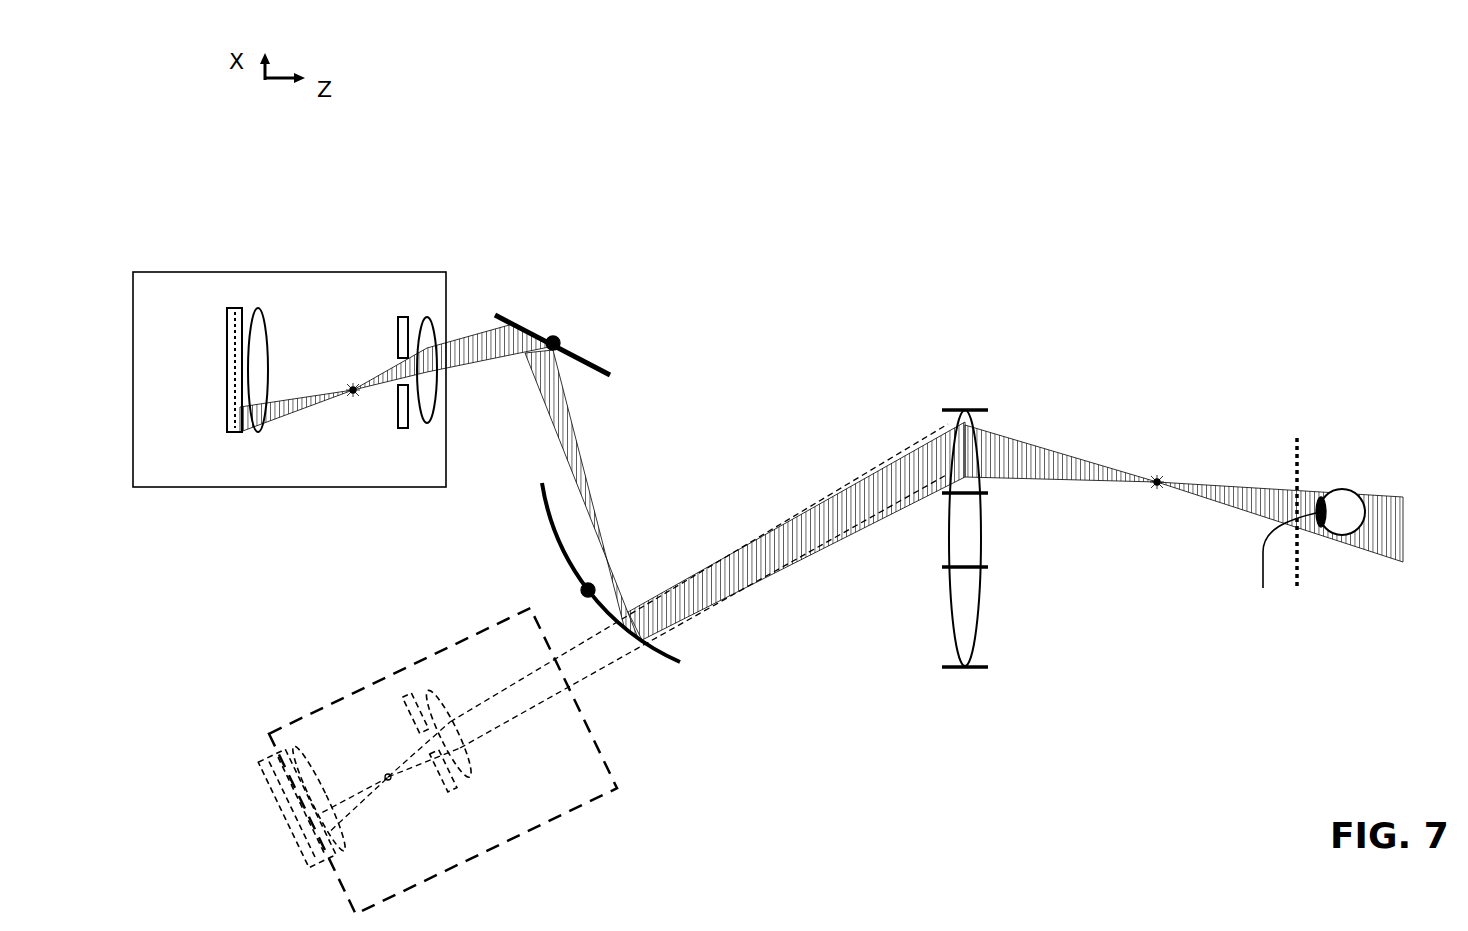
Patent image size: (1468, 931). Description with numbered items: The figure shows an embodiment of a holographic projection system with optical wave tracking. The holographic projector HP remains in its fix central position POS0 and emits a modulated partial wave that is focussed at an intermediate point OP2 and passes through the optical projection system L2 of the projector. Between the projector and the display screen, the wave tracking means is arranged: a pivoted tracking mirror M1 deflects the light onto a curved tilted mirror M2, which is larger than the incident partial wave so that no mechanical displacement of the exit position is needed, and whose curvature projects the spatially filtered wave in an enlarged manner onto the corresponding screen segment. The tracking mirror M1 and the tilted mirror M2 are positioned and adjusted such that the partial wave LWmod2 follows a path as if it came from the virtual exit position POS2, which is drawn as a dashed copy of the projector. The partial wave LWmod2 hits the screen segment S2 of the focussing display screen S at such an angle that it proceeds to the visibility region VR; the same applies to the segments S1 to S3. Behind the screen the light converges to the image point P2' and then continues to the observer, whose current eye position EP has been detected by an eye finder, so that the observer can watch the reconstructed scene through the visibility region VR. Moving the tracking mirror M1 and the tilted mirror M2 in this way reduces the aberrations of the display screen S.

The fix central position POS0 is at (289, 361).
The holographic projector HP is at (207, 357).
The intermediate image plane / focal point OP2 is at (300, 422).
The optical projection system L2 is at (417, 386).
The tracking mirror M1 is at (552, 330).
The tilted mirror M2 is at (712, 623).
The modulated partial wave LWmod2 is at (796, 531).
The virtual exit position POS2 is at (433, 766).
The focussing display screen S is at (967, 501).
The screen segment S1 is at (990, 543).
The screen segment S2 is at (990, 418).
The screen segment S3 is at (992, 597).
The image of the intermediate plane P2' is at (1070, 442).
The visibility region VR is at (1318, 513).
The eye position EP is at (1284, 577).